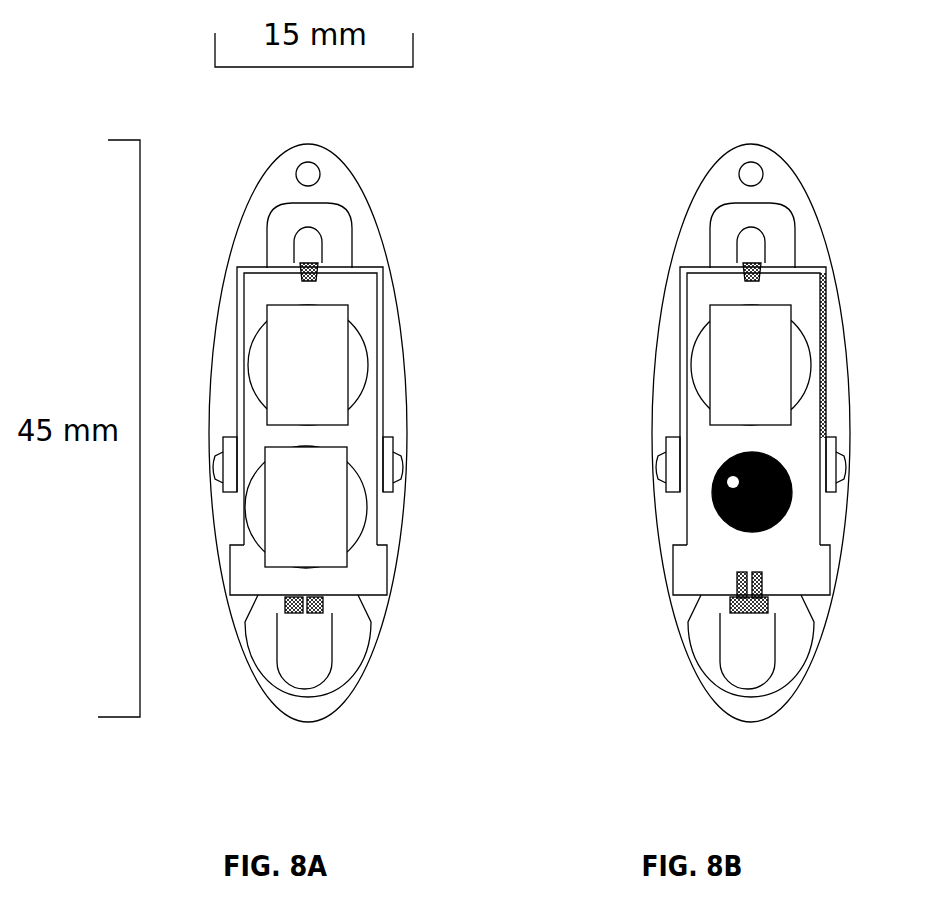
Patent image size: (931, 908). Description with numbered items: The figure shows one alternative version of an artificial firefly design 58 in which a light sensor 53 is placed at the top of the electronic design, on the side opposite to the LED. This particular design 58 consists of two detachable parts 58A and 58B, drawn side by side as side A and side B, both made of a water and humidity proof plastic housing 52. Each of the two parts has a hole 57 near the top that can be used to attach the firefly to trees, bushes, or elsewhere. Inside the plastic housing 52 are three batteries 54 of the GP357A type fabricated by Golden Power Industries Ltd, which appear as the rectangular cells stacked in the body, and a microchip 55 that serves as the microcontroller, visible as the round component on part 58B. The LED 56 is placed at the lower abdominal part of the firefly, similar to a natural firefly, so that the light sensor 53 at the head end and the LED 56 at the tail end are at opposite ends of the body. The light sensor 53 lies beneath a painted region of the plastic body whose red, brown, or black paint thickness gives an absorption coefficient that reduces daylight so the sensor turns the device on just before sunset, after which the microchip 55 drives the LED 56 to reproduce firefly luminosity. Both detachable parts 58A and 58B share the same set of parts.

In FIG. 8A, the firefly design 58 is at (332, 141).
In FIG. 8B, the firefly design 58 is at (732, 141).
In FIG. 8A, the detachable part 58A is at (428, 450).
In FIG. 8B, the detachable part 58B is at (656, 456).
In FIG. 8A, the hole 57 is at (317, 163).
In FIG. 8B, the hole 57 is at (746, 171).
In FIG. 8A, the light sensor 53 is at (316, 250).
In FIG. 8B, the light sensor 53 is at (743, 250).
In FIG. 8A, the plastic housing 52 is at (385, 313).
In FIG. 8B, the plastic housing 52 is at (673, 313).
In FIG. 8A, the batteries 54 is at (338, 403).
In FIG. 8B, the batteries 54 is at (722, 403).
In FIG. 8B, the microchip 55 is at (700, 508).
In FIG. 8A, the LED 56 is at (310, 648).
In FIG. 8B, the LED 56 is at (750, 652).